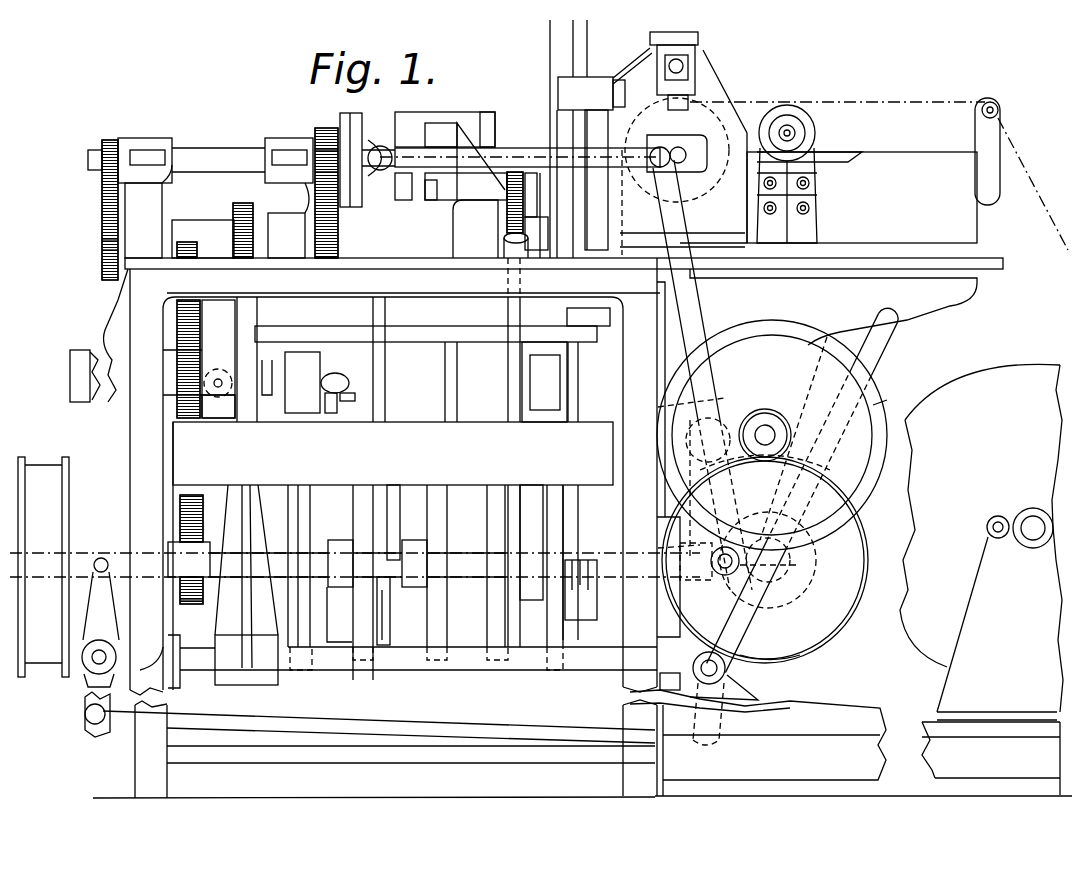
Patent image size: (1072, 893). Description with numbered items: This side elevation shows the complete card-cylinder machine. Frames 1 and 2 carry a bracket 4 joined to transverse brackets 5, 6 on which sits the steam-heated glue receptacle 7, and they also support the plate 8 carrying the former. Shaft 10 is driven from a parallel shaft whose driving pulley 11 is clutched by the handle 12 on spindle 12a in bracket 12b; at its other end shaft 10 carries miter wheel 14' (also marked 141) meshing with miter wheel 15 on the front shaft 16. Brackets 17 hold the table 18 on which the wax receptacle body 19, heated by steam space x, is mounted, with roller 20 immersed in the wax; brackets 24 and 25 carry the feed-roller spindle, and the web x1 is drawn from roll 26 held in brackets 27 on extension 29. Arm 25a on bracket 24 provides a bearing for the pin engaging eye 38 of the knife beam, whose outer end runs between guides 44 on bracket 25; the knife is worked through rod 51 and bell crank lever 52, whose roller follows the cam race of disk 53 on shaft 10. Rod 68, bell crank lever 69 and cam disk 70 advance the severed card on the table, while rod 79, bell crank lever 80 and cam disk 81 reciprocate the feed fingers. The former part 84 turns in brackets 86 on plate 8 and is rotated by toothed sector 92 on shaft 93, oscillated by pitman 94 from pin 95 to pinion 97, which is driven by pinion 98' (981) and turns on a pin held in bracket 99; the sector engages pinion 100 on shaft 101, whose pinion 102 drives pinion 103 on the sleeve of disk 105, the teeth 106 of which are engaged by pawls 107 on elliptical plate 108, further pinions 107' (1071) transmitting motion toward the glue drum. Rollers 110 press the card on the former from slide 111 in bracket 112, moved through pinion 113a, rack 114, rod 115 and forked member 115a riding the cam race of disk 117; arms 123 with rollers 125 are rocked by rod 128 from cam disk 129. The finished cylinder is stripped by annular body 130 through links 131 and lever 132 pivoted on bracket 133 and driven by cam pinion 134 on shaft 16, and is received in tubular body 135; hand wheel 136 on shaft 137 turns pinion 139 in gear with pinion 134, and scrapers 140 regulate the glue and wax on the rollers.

The frame 1 is at (413, 527).
The frame 2 is at (148, 533).
The bearer or bracket 4 is at (393, 556).
The transverse bearer or bracket 5 is at (550, 382).
The transverse bearer or bracket 6 is at (291, 382).
The glue receptacle 7 is at (432, 323).
The plate 8 is at (125, 275).
The shaft 10 is at (398, 560).
The driving pulley 11 is at (355, 567).
The handle 12 is at (878, 350).
The spindle 12a is at (727, 676).
The bracket 12b is at (748, 714).
The miter wheel 14' is at (765, 560).
The miter wheel 141 is at (748, 512).
The second miter wheel 15 is at (803, 566).
The shaft 16 is at (768, 563).
The bracket 17 is at (772, 426).
The table 18 is at (905, 270).
The wax receptacle body 19 is at (862, 197).
The roller 20 is at (705, 198).
The bracket 24 is at (732, 100).
The bracket 25 is at (650, 52).
The arm 25a is at (560, 80).
The roll 26 is at (981, 538).
The bracket 27 is at (991, 666).
The extension 29 is at (758, 735).
The eye 38 is at (565, 110).
The guides 44 is at (549, 40).
The rod 51 is at (578, 525).
The bell crank lever 52 is at (589, 590).
The disk 53 is at (562, 638).
The rod 68 is at (330, 392).
The bell crank lever 69 is at (312, 526).
The disk 70 is at (312, 640).
The rod 79 is at (386, 400).
The bell crank lever 80 is at (388, 627).
The disk 81 is at (375, 512).
The former part 84 is at (213, 152).
The bracket 86 is at (150, 140).
The toothed sector 92 is at (245, 310).
The shaft 93 is at (395, 670).
The pitman 94 is at (218, 408).
The pin 95 is at (218, 370).
The pinion 97 is at (185, 315).
The second pinion 98' is at (189, 559).
The second pinion 981 is at (192, 606).
The bracket 99 is at (118, 398).
The pinion 100 is at (243, 205).
The shaft 101 is at (203, 239).
The second pinion 102 is at (340, 245).
The pinion 103 is at (321, 182).
The disk 105 is at (352, 200).
The teeth 106 is at (95, 172).
The pawls 107 is at (242, 186).
The pinion 107' is at (86, 249).
The pinion 1071 is at (104, 248).
The elliptical plate 108 is at (344, 148).
The rollers 110 is at (438, 122).
The slide 111 is at (466, 161).
The bracket 112 is at (475, 229).
The second pinion 113a is at (538, 221).
The rack 114 is at (525, 192).
The rod 115 is at (515, 322).
The forked member 115a is at (517, 525).
The disk 117 is at (500, 630).
The arms 123 is at (400, 114).
The rollers 125 is at (483, 113).
The rod 128 is at (452, 392).
The disk 129 is at (440, 628).
The annular body 130 is at (380, 145).
The links 131 is at (527, 156).
The lever 132 is at (695, 318).
The bracket 133 is at (712, 420).
The pinion 134 is at (770, 646).
The tubular body 135 is at (520, 143).
The hand wheel 136 is at (892, 393).
The shaft 137 is at (766, 425).
The pinion 139 is at (790, 436).
The scrapers 140 is at (798, 133).
The steam jacket or space x is at (816, 189).
The card material x1 is at (895, 108).